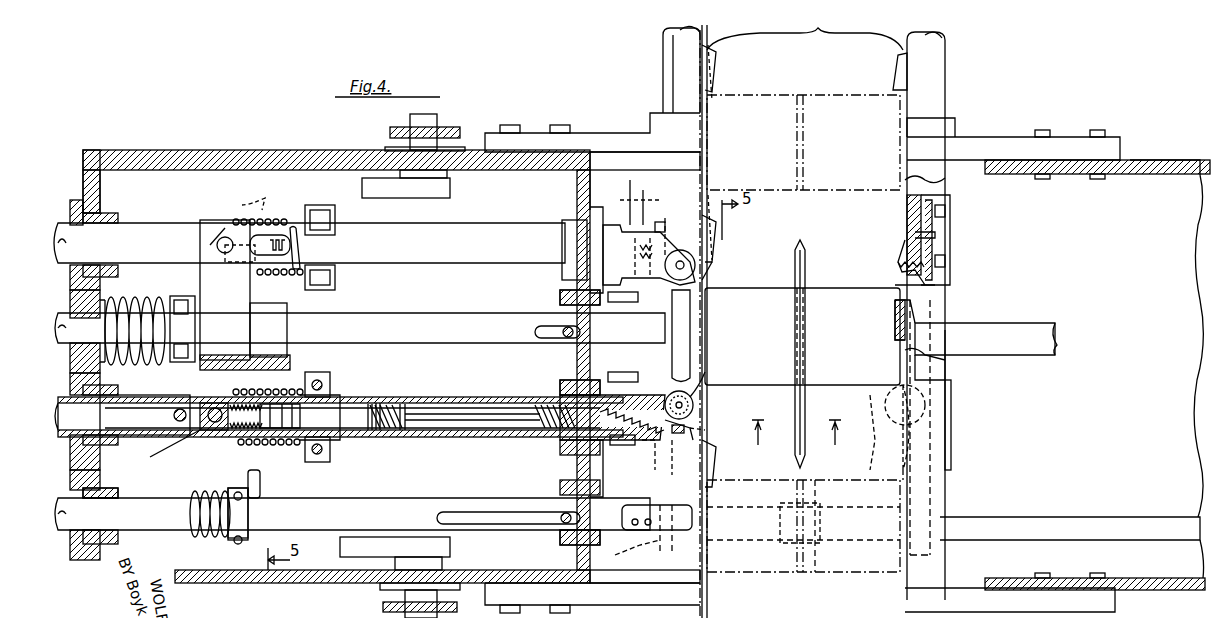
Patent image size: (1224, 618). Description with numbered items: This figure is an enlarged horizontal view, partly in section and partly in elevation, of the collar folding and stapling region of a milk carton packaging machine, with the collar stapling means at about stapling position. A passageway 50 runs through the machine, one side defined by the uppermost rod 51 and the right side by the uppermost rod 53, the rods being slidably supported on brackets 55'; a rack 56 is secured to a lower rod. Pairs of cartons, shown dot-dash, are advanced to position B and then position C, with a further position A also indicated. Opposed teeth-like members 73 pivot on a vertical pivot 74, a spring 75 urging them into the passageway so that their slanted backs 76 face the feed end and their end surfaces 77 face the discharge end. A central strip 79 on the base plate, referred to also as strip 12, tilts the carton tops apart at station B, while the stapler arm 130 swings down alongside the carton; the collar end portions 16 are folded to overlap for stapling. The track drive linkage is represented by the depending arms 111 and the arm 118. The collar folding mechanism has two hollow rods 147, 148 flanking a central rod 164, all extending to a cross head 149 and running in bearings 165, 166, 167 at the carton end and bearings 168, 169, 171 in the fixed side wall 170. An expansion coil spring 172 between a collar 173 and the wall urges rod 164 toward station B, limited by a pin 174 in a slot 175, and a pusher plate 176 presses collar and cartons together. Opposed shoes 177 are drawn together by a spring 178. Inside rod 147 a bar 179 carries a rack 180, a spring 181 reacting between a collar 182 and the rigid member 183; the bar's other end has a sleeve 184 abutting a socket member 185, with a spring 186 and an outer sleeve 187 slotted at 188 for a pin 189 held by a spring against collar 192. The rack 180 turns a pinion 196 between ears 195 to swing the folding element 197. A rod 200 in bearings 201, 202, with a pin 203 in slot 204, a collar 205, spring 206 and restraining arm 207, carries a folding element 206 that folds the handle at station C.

The depending arms 111 is at (450, 127).
The arm 118 is at (365, 182).
The fixed side wall 170 is at (98, 200).
The bearing 169 is at (118, 216).
The pin 189 is at (214, 224).
The socket member 185 is at (250, 215).
The hollow rod 148 is at (443, 232).
The bearing 166 is at (563, 224).
The rigid member 183 is at (622, 225).
The folding element 197 is at (670, 230).
The spring 178 is at (640, 198).
The bearing 171 is at (90, 298).
The expansion coil spring 172 is at (158, 300).
The cross head 149 is at (290, 306).
The rod 164 is at (412, 318).
The pin 174 is at (563, 325).
The slot 175 is at (547, 340).
The bearing 167 is at (568, 308).
The shoe 177 is at (635, 372).
The pusher plate 176 is at (690, 333).
The collar 173 is at (185, 362).
The hollow rod 147 is at (482, 398).
The bearing 168 is at (105, 438).
The slot 188 is at (222, 432).
The sleeve 187 is at (222, 437).
The spring 186 is at (285, 440).
The sleeve 184 is at (328, 400).
The collar 192 is at (330, 458).
The collar 182 is at (370, 402).
The spring 181 is at (410, 404).
The bar 179 is at (465, 432).
The bearing 165 is at (568, 393).
The rack 180 is at (628, 437).
The pinion 196 is at (695, 400).
The ears 195 is at (700, 380).
The rod 200 is at (373, 504).
The slot 204 is at (470, 512).
The pin 203 is at (556, 525).
The bearing 201 is at (566, 538).
The bearing 202 is at (105, 498).
The spring 206 is at (195, 497).
The arm 207 is at (268, 470).
The collar 205 is at (240, 543).
The brackets 55' is at (847, 362).
The rod 51 is at (665, 95).
The passageway 50 is at (805, 33).
The rod 53 is at (946, 88).
The central strip 79 is at (795, 396).
The strip 12 is at (797, 443).
The rack 56 is at (973, 493).
The vertical pivot 74 is at (930, 195).
The spring 75 is at (945, 252).
The slanted backs 76 is at (712, 268).
The teeth-like members 73 is at (722, 275).
The end surfaces 77 is at (712, 283).
The arm 130 is at (965, 325).
The end portions 16 is at (930, 352).
The station A is at (840, 98).
The position B is at (826, 282).
The position C is at (761, 581).